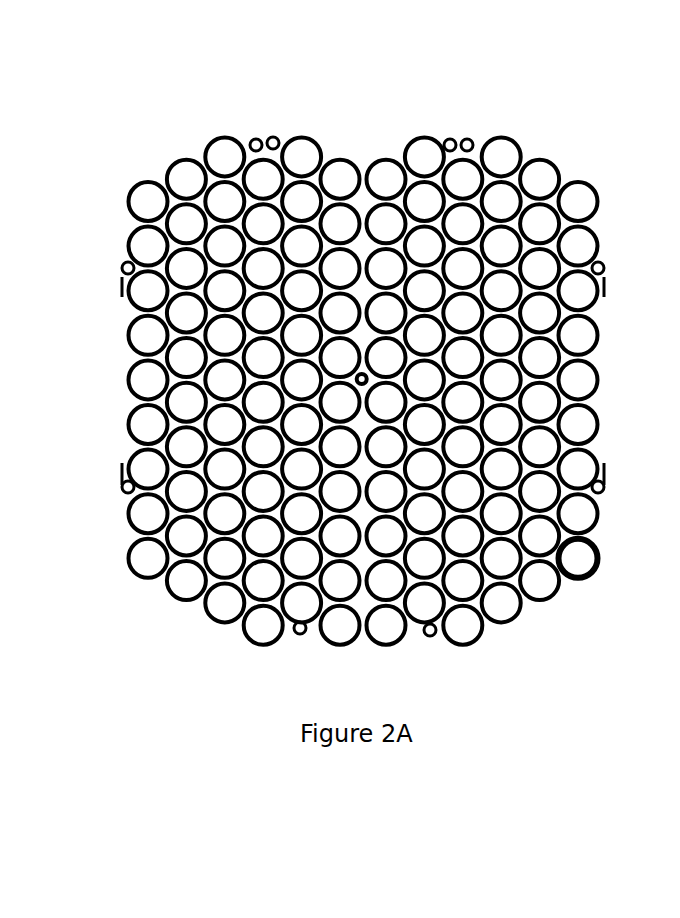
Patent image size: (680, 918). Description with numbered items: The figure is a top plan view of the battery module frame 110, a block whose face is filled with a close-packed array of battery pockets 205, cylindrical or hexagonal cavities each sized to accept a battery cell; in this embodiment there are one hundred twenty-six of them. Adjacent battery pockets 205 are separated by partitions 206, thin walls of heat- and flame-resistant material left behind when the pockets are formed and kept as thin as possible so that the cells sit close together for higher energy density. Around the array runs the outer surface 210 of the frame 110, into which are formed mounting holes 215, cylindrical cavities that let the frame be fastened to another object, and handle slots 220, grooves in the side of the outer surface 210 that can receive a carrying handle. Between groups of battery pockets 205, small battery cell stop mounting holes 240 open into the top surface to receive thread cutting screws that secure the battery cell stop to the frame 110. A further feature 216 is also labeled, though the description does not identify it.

The battery module frame 110 is at (361, 355).
The battery pockets 205 is at (190, 208).
The partitions 206 is at (155, 225).
The outer surface 210 is at (361, 338).
The mounting holes 215 is at (604, 262).
The handle slots 220 is at (602, 468).
The battery cell stop mounting holes 240 is at (438, 188).
The highlighted receptacle 216 is at (620, 565).